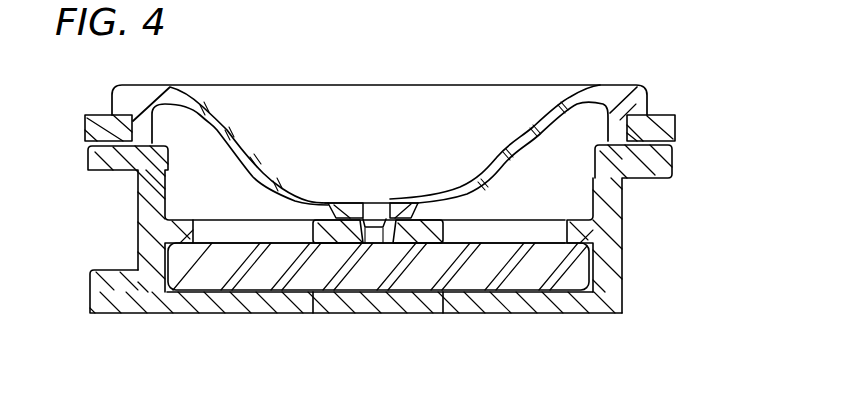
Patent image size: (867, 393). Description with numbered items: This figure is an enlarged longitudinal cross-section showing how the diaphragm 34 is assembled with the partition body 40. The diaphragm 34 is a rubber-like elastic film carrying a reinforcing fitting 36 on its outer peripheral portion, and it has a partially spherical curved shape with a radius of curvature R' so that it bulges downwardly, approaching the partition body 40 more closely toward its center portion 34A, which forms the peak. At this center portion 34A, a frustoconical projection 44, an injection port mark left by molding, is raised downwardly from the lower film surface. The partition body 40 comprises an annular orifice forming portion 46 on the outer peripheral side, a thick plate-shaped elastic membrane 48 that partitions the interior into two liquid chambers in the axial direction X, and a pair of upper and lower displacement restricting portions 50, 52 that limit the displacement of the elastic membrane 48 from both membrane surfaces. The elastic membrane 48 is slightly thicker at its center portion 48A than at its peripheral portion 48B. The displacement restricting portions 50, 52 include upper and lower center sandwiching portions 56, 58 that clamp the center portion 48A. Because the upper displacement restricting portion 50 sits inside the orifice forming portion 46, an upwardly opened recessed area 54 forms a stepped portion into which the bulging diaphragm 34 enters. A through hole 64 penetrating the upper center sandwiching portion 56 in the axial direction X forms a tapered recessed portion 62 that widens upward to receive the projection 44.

The diaphragm 34 is at (247, 148).
The center portion 34A is at (373, 203).
The reinforcing fitting 36 is at (657, 115).
The partition body 40 is at (120, 313).
The projection 44 is at (392, 224).
The orifice forming portion 46 is at (100, 160).
The elastic membrane 48 is at (257, 277).
The center portion 48A is at (430, 268).
The peripheral portion 48B is at (210, 272).
The upper displacement restricting portion 50 is at (565, 208).
The lower displacement restricting portion 52 is at (543, 313).
The recessed area 54 is at (170, 214).
The upper center sandwiching portion 56 is at (333, 231).
The lower center sandwiching portion 58 is at (338, 315).
The recessed portion 62 is at (390, 219).
The through hole 64 is at (372, 235).
The radius of curvature R' is at (435, 109).
The axial direction X is at (668, 262).